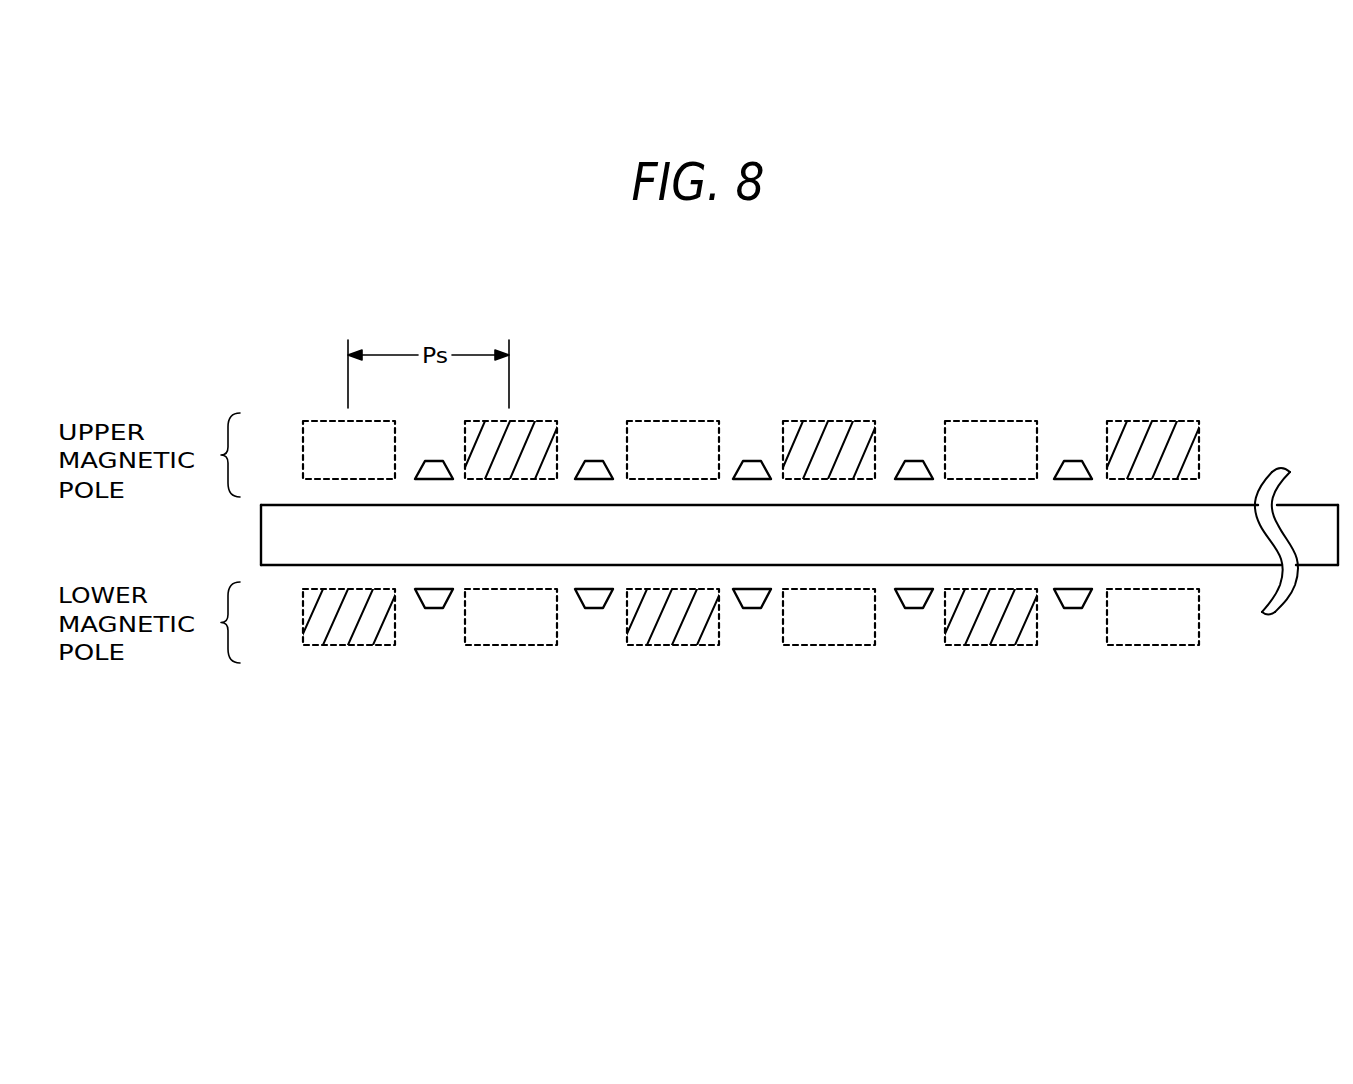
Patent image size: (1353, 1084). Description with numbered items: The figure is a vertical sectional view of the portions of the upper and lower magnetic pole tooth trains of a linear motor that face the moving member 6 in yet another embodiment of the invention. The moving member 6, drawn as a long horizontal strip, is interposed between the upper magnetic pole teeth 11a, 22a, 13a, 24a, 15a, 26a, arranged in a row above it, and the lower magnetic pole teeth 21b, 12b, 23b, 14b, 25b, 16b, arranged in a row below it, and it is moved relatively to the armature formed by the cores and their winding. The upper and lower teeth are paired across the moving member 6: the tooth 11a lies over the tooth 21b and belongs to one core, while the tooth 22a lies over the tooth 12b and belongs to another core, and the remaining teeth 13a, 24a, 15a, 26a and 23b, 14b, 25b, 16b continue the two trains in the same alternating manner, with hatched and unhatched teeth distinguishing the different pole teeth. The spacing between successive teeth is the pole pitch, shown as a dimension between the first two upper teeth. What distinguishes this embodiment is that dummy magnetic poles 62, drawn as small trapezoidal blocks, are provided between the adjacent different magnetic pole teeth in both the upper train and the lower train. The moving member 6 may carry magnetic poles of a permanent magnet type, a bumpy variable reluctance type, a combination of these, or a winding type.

The upper magnetic pole tooth 11a is at (321, 421).
The upper magnetic pole tooth 22a is at (545, 421).
The upper magnetic pole tooth 13a is at (670, 421).
The upper magnetic pole tooth 24a is at (823, 421).
The upper magnetic pole tooth 15a is at (990, 421).
The upper magnetic pole tooth 26a is at (1147, 421).
The lower magnetic pole tooth 21b is at (350, 645).
The lower magnetic pole tooth 12b is at (510, 645).
The lower magnetic pole tooth 23b is at (678, 645).
The lower magnetic pole tooth 14b is at (830, 645).
The lower magnetic pole tooth 25b is at (1000, 643).
The lower magnetic pole tooth 16b is at (1160, 643).
The dummy magnetic pole 62 is at (752, 461).
The moving member 6 is at (1213, 505).